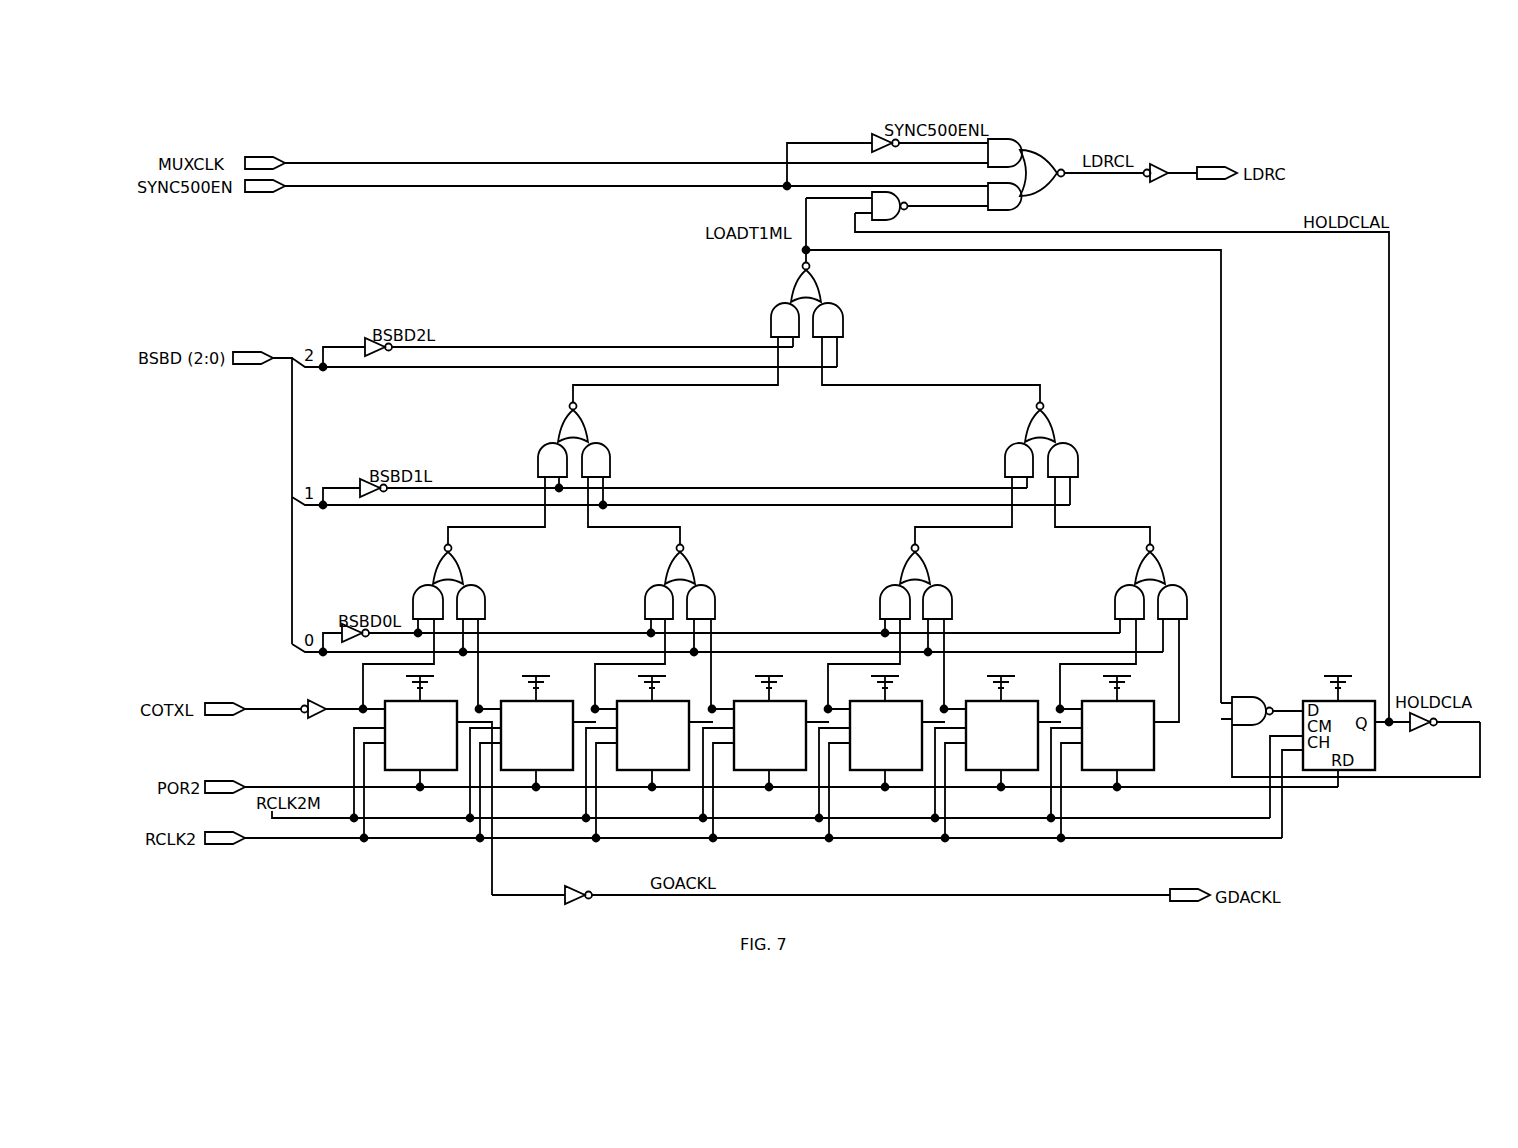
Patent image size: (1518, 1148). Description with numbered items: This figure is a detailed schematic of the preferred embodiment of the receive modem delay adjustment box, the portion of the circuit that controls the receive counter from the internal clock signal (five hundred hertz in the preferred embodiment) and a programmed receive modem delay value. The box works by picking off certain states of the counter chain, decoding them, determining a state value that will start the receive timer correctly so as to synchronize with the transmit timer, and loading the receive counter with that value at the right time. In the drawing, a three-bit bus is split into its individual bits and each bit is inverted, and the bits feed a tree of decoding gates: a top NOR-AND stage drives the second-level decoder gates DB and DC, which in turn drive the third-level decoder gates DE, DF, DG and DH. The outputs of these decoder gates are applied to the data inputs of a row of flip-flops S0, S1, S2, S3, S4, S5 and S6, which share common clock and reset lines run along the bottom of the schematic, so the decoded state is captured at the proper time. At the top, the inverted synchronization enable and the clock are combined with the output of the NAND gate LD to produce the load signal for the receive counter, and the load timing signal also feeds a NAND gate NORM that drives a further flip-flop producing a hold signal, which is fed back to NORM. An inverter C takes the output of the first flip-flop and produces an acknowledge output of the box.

The LD NAND gate LD is at (897, 204).
The decoder NOR-AND gate DB is at (564, 469).
The decoder NOR-AND gate DC is at (1032, 466).
The decoder gate DE is at (424, 622).
The decoder gate DF is at (655, 622).
The decoder gate DG is at (891, 622).
The decoder gate DH is at (1123, 629).
The flip-flop S0 is at (422, 785).
The flip-flop S1 is at (532, 759).
The flip-flop S2 is at (648, 759).
The flip-flop S3 is at (765, 759).
The flip-flop S4 is at (881, 759).
The flip-flop S5 is at (997, 759).
The flip-flop S6 is at (1101, 759).
The NORM NAND gate NORM is at (1350, 728).
The inverter C is at (851, 886).